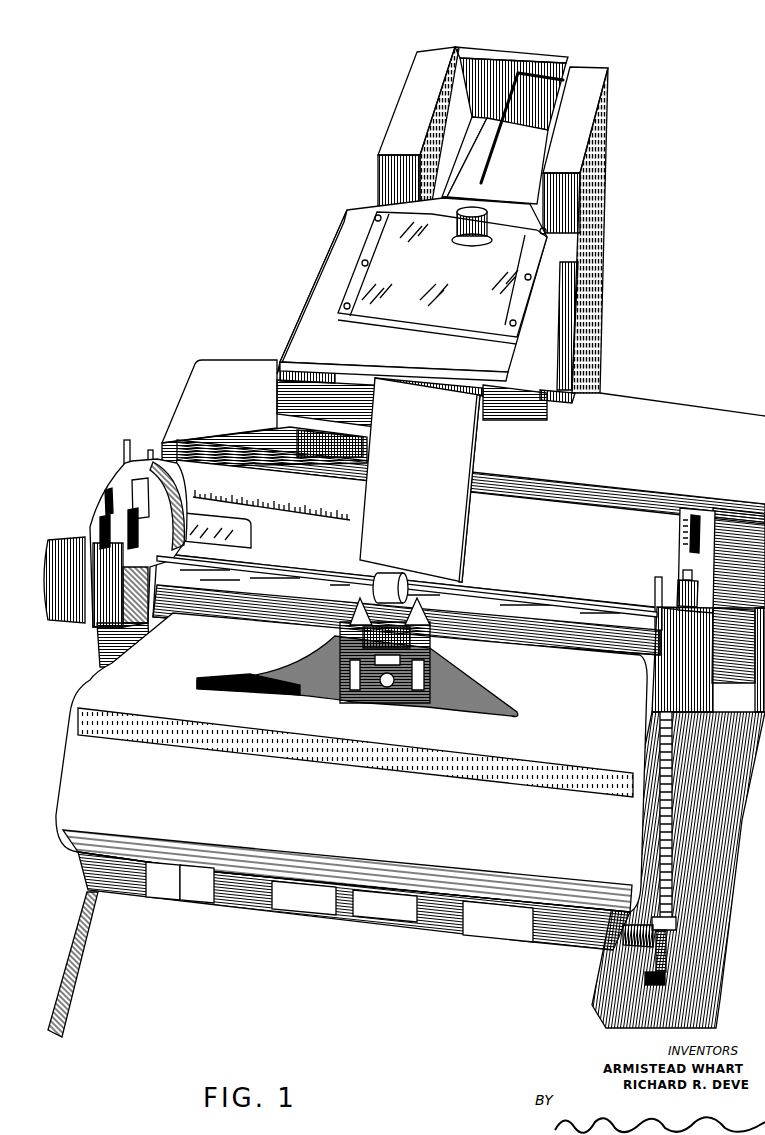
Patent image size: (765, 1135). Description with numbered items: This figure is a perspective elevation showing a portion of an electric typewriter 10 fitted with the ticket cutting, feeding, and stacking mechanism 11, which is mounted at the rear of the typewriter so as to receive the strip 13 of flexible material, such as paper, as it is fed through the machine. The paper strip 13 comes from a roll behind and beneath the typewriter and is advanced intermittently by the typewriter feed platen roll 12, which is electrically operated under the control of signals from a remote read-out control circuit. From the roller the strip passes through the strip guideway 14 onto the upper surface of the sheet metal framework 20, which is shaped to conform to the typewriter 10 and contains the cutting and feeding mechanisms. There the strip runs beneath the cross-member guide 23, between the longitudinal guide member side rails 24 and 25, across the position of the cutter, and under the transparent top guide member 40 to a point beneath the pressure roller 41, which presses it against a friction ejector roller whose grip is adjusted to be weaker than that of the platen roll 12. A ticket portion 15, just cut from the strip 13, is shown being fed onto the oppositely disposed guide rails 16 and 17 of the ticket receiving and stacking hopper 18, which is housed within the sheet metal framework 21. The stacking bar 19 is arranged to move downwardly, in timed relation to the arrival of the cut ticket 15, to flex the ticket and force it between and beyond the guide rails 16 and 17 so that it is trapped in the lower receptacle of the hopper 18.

The electric typewriter 10 is at (348, 820).
The ticket cutting, feeding, and stacking mechanism 11 is at (298, 193).
The typewriter feed platen roll 12 is at (568, 593).
The paper strip 13 is at (403, 536).
The strip guideway 14 is at (475, 480).
The cut ticket 15 is at (500, 212).
The guide rail 16 is at (462, 152).
The guide rail 17 is at (533, 197).
The ticket receiving and stacking hopper 18 is at (588, 64).
The stacking bar 19 is at (494, 145).
The framework 20 is at (307, 297).
The sheet metal framework 21 is at (396, 109).
The cross-member guide 23 is at (432, 369).
The longitudinal guide member side rail 24 is at (503, 372).
The longitudinal guide member side rail 25 is at (308, 327).
The transparent top guide member 40 is at (383, 258).
The pressure roller 41 is at (465, 251).